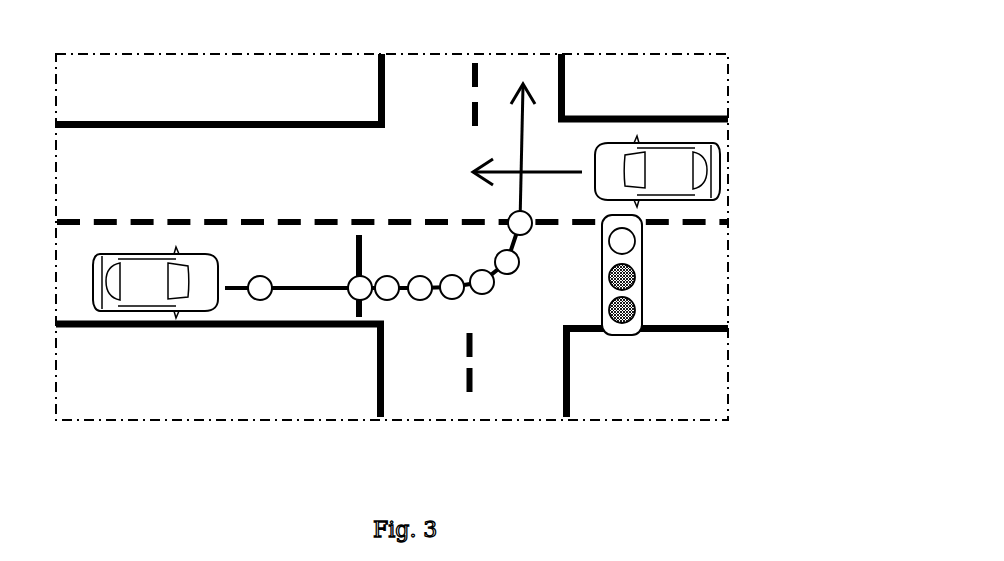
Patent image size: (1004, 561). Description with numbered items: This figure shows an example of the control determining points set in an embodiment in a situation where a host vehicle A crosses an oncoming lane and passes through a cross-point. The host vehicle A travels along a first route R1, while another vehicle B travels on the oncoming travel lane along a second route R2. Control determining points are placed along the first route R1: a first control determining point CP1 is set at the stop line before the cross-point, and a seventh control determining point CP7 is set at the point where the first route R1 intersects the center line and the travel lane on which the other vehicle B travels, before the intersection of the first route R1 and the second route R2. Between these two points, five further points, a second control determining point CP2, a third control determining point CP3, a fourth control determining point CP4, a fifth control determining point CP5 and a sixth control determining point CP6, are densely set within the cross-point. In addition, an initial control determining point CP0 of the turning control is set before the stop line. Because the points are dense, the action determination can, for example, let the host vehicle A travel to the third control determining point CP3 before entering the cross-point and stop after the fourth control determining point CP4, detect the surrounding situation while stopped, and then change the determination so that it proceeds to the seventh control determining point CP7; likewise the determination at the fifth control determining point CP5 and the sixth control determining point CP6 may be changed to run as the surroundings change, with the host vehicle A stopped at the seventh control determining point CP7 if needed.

The host vehicle A is at (97, 274).
The another vehicle B is at (714, 150).
The first route R1 is at (371, 280).
The second route R2 is at (563, 170).
The initial control determining point CP0 is at (253, 277).
The first control determining point CP1 is at (348, 277).
The second control determining point CP2 is at (388, 276).
The third control determining point CP3 is at (417, 277).
The fourth control determining point CP4 is at (452, 299).
The fifth control determining point CP5 is at (488, 292).
The sixth control determining point CP6 is at (513, 274).
The seventh control determining point CP7 is at (524, 234).